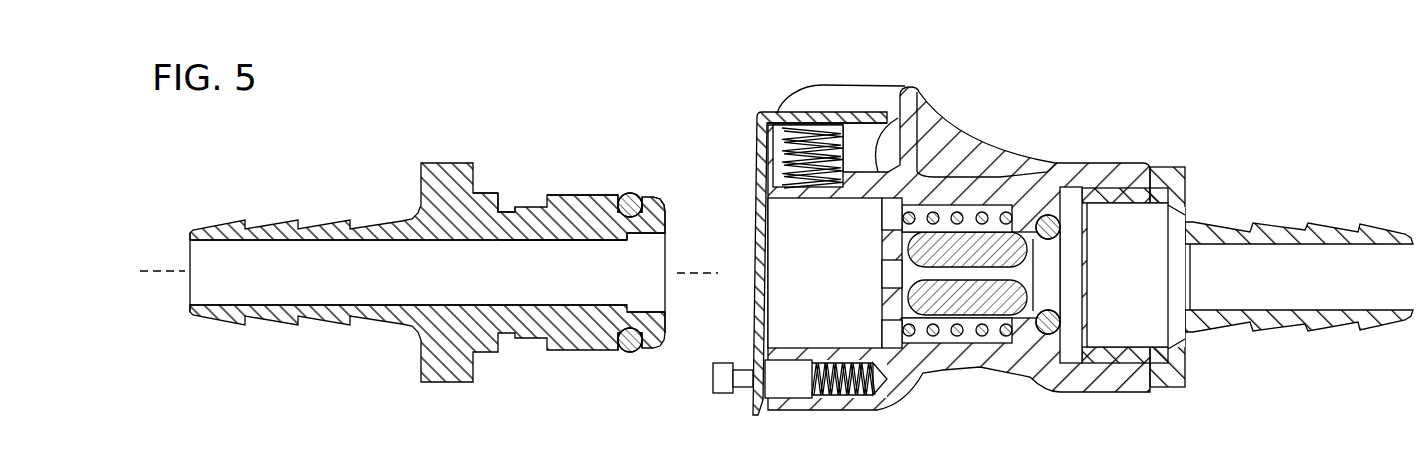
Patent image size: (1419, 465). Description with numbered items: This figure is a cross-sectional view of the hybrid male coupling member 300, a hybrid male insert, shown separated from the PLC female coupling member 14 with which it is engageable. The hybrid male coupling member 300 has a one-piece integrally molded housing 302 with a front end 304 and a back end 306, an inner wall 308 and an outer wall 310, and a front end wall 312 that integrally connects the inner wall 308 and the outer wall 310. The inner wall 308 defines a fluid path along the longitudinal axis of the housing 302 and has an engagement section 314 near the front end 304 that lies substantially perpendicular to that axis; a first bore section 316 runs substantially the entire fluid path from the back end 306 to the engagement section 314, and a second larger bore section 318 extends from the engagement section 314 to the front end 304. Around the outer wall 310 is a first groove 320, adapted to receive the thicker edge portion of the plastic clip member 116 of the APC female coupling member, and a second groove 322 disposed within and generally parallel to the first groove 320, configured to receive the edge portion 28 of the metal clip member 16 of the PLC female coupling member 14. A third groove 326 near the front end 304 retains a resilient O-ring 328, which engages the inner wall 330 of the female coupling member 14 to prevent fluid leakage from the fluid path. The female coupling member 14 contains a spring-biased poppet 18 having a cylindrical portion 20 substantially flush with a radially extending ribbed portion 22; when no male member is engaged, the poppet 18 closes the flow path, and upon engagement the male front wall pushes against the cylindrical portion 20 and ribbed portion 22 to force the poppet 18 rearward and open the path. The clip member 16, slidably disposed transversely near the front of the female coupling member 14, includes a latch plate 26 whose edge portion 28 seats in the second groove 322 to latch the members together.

The female coupling member 14 is at (1032, 257).
The clip member 16 is at (756, 110).
The spring-biased poppet 18 is at (1028, 322).
The cylindrical portion 20 is at (890, 241).
The ribbed portion 22 is at (890, 210).
The latch plate 26 is at (762, 140).
The edge portion 28 is at (762, 345).
The plastic clip member 116 is at (748, 464).
The hybrid male coupling member 300 is at (436, 216).
The housing 302 is at (375, 220).
The front end 304 is at (667, 252).
The back end 306 is at (190, 240).
The inner wall 308 is at (548, 243).
The outer wall 310 is at (551, 195).
The front end wall 312 is at (667, 204).
The engagement section 314 is at (630, 233).
The first bore section 316 is at (445, 285).
The second larger bore section 318 is at (648, 285).
The first groove 320 is at (512, 200).
The second groove 322 is at (505, 205).
The third groove 326 is at (620, 188).
The O-ring 328 is at (639, 195).
The inner wall 330 is at (817, 198).